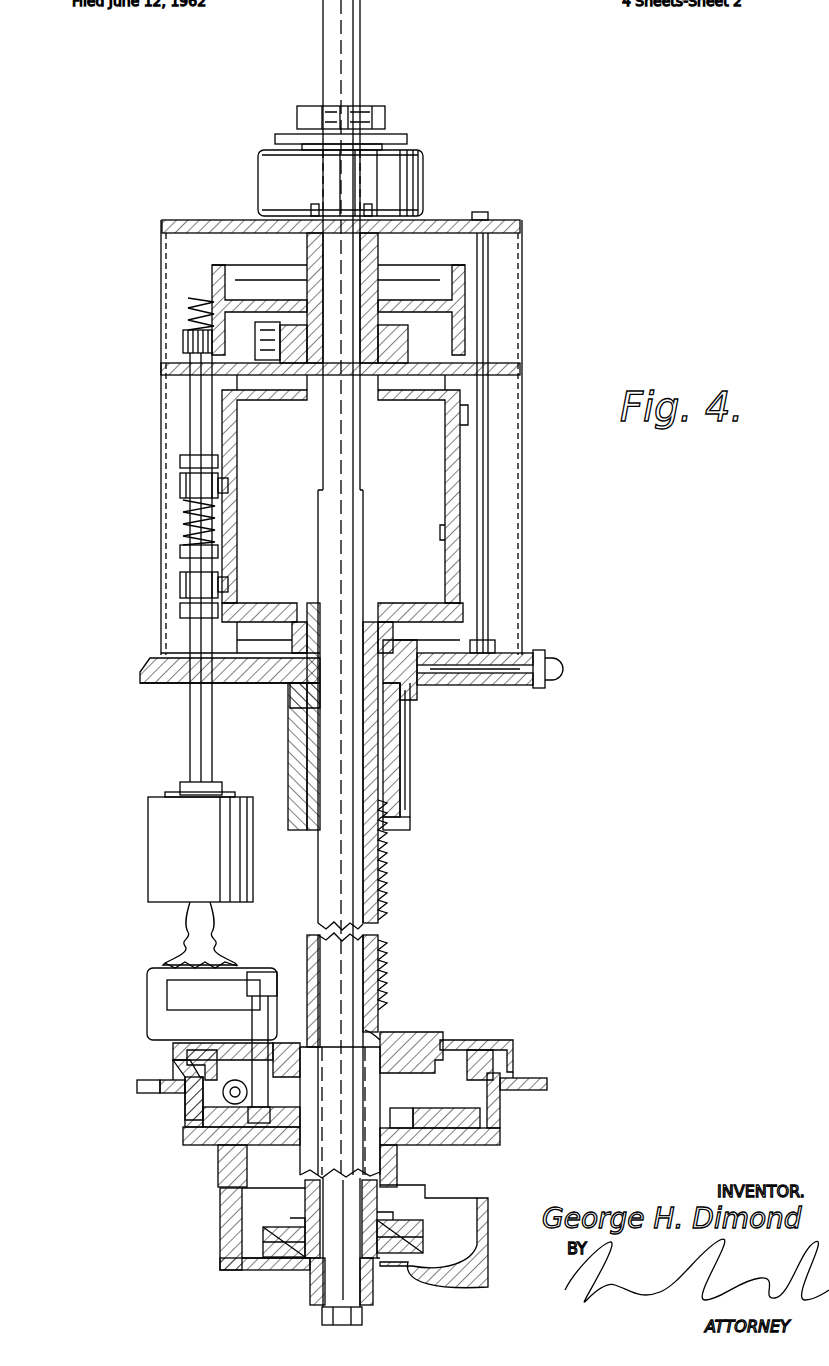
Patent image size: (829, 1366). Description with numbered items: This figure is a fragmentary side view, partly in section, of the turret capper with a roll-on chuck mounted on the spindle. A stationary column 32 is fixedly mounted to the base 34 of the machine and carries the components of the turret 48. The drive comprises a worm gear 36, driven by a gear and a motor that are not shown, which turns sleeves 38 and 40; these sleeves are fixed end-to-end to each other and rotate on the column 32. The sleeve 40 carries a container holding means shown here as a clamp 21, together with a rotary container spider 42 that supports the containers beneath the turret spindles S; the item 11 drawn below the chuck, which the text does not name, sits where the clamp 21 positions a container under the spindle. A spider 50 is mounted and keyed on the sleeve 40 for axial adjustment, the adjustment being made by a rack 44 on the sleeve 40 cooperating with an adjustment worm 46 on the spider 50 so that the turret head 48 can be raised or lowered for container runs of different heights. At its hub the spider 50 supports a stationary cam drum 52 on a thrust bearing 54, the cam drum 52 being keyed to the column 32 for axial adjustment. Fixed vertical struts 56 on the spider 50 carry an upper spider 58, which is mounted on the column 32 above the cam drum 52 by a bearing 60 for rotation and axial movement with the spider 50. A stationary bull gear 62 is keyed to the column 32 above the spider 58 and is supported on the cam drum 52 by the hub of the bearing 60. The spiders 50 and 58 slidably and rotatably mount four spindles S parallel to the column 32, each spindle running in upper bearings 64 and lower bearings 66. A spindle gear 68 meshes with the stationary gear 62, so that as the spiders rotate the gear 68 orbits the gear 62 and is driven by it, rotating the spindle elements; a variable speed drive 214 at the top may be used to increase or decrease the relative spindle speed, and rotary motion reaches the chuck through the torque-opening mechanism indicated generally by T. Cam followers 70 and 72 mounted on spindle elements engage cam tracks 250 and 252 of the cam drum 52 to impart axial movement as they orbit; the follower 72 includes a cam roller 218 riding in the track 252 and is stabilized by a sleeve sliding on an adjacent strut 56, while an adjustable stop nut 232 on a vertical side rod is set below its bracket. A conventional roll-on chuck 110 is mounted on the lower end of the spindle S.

The variable speed drive 214 is at (258, 168).
The stationary bull gear 62 is at (521, 266).
The bearing 60 is at (408, 314).
The torque-opening mechanism T is at (551, 350).
The spider 58 is at (521, 368).
The cam track 250 is at (468, 418).
The vertical struts 56 is at (460, 468).
The cam track 252 is at (445, 532).
The stationary cam drum 52 is at (463, 580).
The turret 48 is at (558, 621).
The thrust bearing 54 is at (500, 643).
The spindle gear 68 is at (172, 340).
The upper bearings 64 is at (182, 370).
The cam follower 70 is at (165, 478).
The adjustable stop nut 232 is at (232, 486).
The cam roller 218 is at (232, 582).
The cam follower 72 is at (165, 584).
The spider 50 is at (160, 640).
The lower bearings 66 is at (160, 668).
The turret spindle S is at (166, 754).
The roll-on chuck 110 is at (136, 855).
The nozzle 11 is at (165, 962).
The clamp 21 is at (167, 994).
The sleeve 38 is at (330, 1150).
The worm gear 36 is at (263, 1245).
The base 34 is at (478, 1210).
The adjustment worm 46 is at (410, 822).
The rack 44 is at (387, 860).
The stationary column 32 is at (380, 918).
The sleeve 40 is at (418, 1030).
The rotary container spider 42 is at (495, 1040).